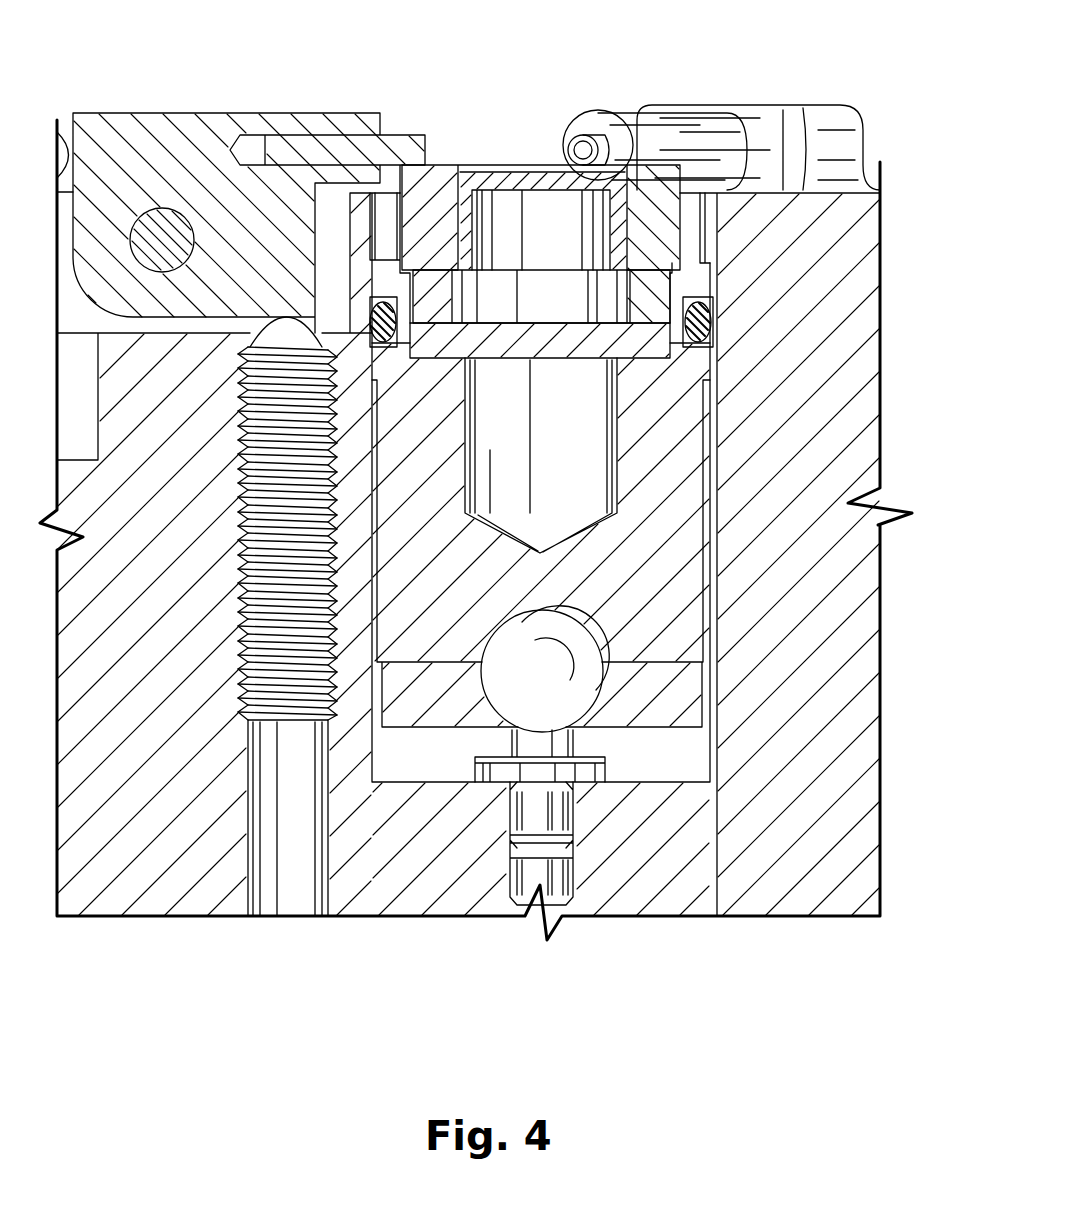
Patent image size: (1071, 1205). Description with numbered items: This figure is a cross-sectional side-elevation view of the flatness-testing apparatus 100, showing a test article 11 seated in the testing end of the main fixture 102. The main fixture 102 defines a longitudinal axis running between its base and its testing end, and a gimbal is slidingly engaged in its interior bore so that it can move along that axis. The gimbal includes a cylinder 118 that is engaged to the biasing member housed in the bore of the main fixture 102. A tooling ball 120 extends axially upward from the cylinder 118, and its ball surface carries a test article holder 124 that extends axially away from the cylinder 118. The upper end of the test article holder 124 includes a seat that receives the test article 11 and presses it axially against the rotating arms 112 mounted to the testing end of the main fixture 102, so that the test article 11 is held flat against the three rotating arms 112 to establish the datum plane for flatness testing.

The apparatus 100 is at (185, 73).
The main fixture 102 is at (840, 810).
The rotating arms 112 is at (333, 113).
The test article 11 is at (531, 212).
The test article holder 124 is at (668, 578).
The tooling ball 120 is at (575, 690).
The cylinder 118 is at (640, 873).